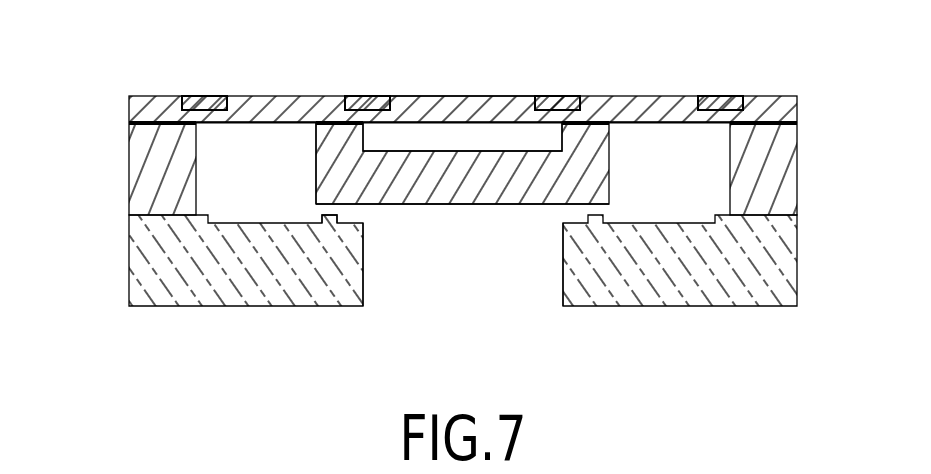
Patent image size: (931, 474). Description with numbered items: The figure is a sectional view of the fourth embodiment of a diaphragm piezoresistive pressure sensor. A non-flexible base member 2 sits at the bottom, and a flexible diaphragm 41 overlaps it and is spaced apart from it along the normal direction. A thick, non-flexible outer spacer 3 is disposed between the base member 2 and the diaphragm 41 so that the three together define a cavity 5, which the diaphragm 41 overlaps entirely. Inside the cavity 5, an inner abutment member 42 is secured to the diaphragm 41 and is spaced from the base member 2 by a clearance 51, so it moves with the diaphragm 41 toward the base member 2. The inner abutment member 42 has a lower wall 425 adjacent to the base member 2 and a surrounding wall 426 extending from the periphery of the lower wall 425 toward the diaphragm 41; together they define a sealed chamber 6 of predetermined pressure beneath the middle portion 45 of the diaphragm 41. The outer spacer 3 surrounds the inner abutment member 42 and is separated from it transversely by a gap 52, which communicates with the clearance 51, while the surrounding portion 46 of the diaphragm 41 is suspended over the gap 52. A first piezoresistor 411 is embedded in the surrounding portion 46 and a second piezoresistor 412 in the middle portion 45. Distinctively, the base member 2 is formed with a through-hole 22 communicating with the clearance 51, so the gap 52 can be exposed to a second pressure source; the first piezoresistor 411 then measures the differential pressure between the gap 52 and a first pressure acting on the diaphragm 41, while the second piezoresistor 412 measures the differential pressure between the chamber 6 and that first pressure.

The base member 2 is at (692, 295).
The through-hole 22 is at (510, 271).
The outer spacer 3 is at (142, 163).
The cavity 5 is at (228, 181).
The chamber 6 is at (426, 137).
The diaphragm 41 is at (463, 67).
The first piezoresistor 411 is at (200, 96).
The second piezoresistor 412 is at (369, 96).
The inner abutment member 42 is at (612, 168).
The lower wall 425 is at (440, 198).
The surrounding wall 426 is at (316, 138).
The middle portion 45 is at (472, 96).
The surrounding portion 46 is at (275, 96).
The clearance 51 is at (353, 210).
The gap 52 is at (266, 175).